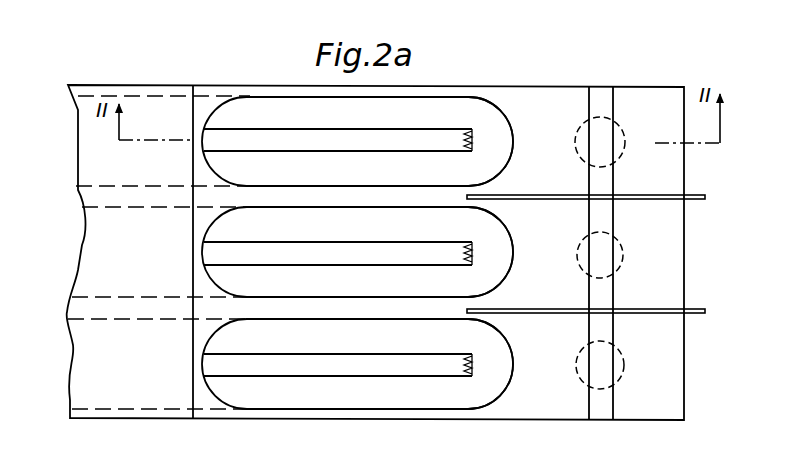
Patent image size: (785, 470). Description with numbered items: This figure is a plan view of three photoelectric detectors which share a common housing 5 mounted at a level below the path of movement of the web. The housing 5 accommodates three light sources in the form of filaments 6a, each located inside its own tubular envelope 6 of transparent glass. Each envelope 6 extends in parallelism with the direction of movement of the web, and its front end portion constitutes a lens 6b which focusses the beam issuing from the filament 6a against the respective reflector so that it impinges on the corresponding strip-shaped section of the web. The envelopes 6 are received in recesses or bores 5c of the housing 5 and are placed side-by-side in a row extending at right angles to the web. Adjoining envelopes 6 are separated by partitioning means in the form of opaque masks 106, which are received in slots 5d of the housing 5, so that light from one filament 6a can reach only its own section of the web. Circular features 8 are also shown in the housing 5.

The housing 5 is at (527, 84).
The recesses or bores 5c is at (166, 98).
The slots 5d is at (667, 202).
The tubular envelope 6 is at (288, 115).
The filament 6a is at (463, 139).
The lens 6b is at (503, 125).
The holes 8 is at (612, 120).
The opaque mask 106 is at (522, 195).